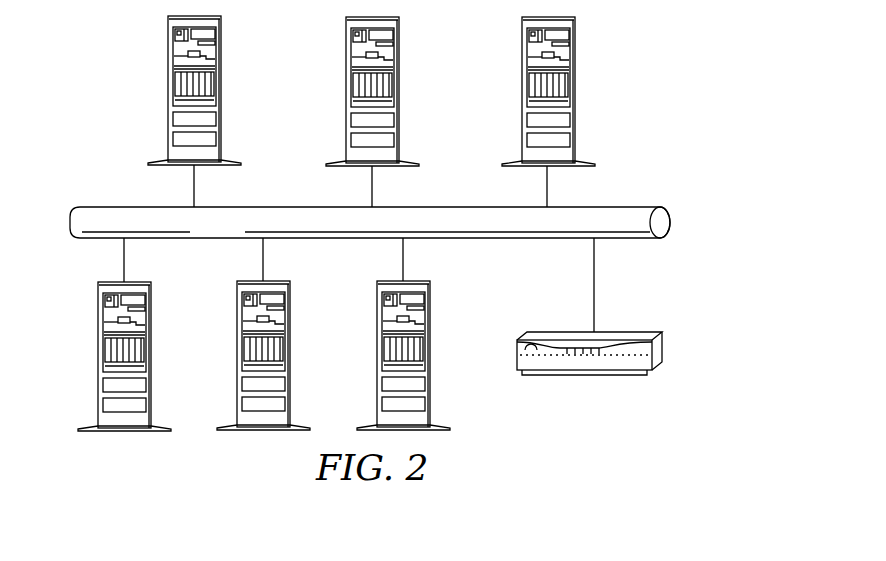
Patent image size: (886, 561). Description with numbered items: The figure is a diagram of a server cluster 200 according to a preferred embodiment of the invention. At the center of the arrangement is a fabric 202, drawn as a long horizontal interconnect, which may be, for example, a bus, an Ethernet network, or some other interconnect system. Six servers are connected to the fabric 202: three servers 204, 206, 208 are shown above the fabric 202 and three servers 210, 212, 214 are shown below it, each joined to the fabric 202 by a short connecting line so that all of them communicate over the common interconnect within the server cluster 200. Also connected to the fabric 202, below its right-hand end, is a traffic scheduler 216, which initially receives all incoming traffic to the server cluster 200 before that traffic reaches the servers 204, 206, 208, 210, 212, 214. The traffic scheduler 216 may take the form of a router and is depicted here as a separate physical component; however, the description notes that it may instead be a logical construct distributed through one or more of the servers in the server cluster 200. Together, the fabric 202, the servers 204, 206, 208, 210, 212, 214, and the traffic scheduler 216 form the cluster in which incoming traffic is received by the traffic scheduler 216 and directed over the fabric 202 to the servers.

The server cluster 200 is at (702, 236).
The fabric 202 is at (450, 206).
The server 204 is at (574, 92).
The server 206 is at (346, 92).
The server 208 is at (168, 93).
The server 210 is at (430, 357).
The server 212 is at (237, 356).
The server 214 is at (98, 356).
The traffic scheduler 216 is at (618, 372).